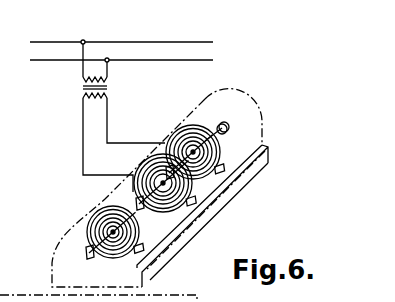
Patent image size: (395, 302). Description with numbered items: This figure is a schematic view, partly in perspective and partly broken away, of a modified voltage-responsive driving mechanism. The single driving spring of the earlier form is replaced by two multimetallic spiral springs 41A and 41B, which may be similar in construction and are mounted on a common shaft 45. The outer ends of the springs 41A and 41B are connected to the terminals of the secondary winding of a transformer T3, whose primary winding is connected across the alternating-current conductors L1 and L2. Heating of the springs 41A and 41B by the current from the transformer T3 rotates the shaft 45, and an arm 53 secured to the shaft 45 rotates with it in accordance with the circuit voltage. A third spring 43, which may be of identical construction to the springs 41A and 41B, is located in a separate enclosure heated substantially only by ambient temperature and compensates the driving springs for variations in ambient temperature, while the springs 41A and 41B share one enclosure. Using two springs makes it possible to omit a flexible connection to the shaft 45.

The conductor L1 is at (171, 42).
The conductor L2 is at (176, 61).
The transformer T3 is at (83, 84).
The shaft 45 is at (220, 129).
The multimetallic spiral spring 41B is at (220, 160).
The multimetallic spiral spring 41A is at (190, 190).
The spring 43 is at (140, 224).
The arm 53 is at (91, 257).